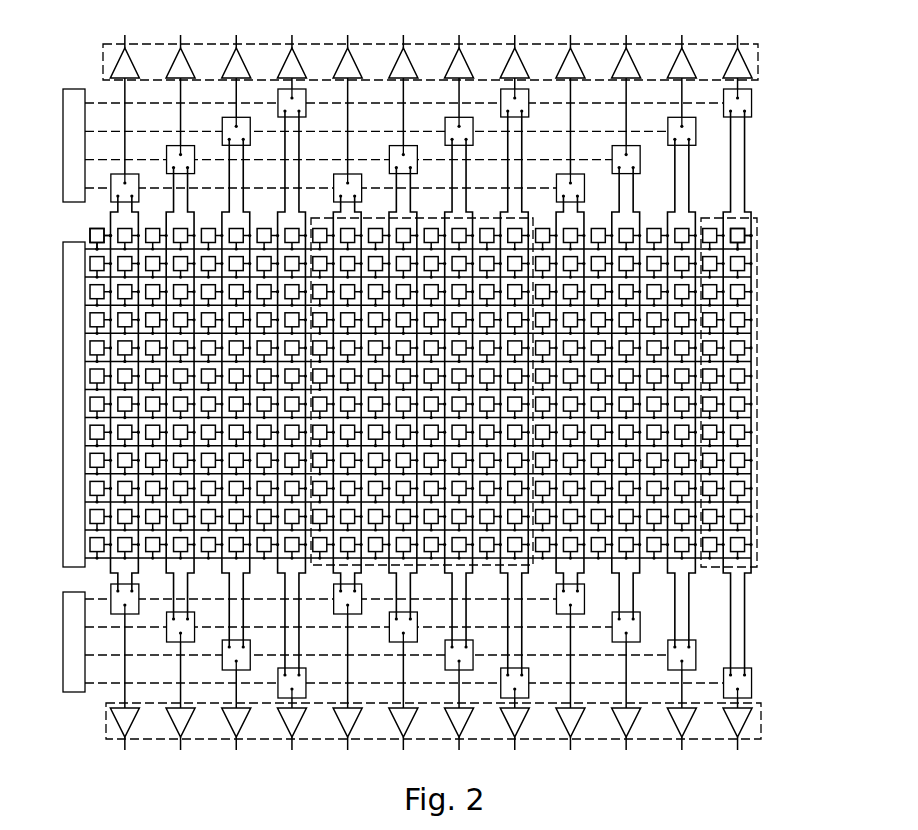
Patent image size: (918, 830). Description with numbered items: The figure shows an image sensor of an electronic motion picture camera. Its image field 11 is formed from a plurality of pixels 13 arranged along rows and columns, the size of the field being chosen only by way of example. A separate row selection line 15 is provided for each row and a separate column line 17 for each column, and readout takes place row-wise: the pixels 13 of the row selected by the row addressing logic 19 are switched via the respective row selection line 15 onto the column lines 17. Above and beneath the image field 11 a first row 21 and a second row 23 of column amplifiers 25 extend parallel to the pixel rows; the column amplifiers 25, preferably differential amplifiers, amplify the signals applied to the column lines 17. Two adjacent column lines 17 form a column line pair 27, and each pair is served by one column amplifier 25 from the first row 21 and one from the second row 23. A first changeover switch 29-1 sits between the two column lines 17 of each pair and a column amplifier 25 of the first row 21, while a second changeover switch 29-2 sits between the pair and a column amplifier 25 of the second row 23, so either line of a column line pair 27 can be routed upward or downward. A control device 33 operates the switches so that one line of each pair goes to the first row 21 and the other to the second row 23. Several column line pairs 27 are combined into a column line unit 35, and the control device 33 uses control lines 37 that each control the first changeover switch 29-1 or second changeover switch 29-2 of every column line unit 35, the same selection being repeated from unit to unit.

The image field 11 is at (780, 390).
The pixel 13 is at (89, 226).
The row selection line 15 is at (743, 248).
The column line 17 is at (108, 572).
The row addressing logic 19 is at (63, 388).
The first row of column amplifiers 21 is at (101, 62).
The second row of column amplifiers 23 is at (104, 722).
The column amplifier 25 is at (132, 62).
The column line pair 27 is at (757, 501).
The first changeover switch 29-1 is at (753, 101).
The second changeover switch 29-2 is at (701, 653).
The control device 33 is at (63, 145).
The column line unit 35 is at (316, 570).
The control line 37 is at (550, 687).